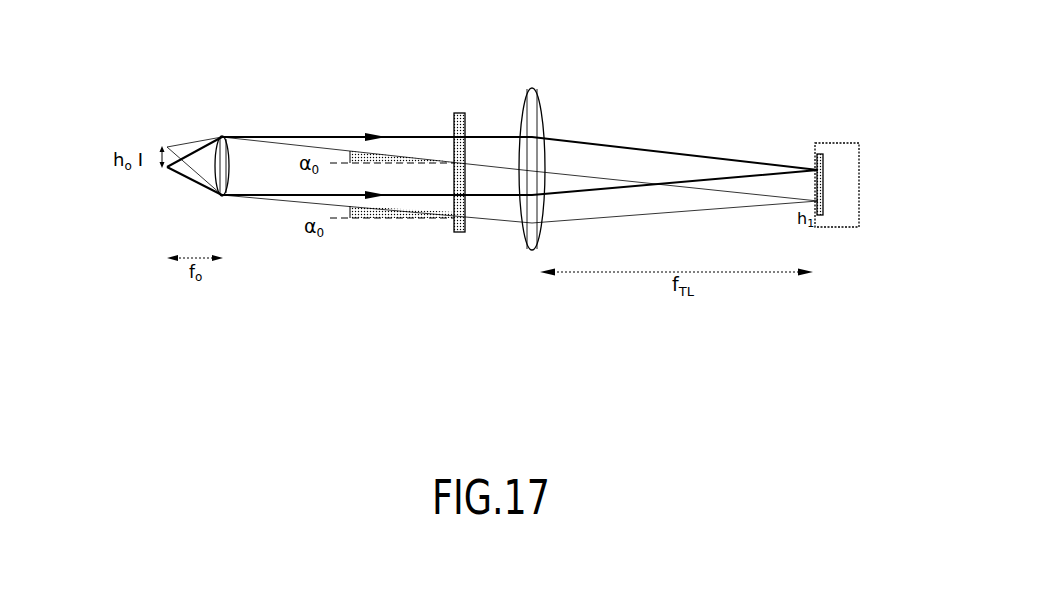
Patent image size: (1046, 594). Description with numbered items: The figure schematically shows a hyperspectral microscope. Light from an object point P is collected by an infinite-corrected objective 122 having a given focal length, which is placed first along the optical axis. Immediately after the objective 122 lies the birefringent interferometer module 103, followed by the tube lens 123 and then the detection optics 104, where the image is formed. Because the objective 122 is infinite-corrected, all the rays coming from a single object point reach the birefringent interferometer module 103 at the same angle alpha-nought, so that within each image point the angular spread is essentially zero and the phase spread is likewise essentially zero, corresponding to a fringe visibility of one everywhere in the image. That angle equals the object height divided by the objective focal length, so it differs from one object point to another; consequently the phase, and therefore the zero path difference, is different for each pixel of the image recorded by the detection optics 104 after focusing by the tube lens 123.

The infinite-corrected objective 122 is at (232, 153).
The birefringent interferometer module 103 is at (436, 97).
The tube lens 123 is at (542, 118).
The detection optics 104 is at (837, 143).